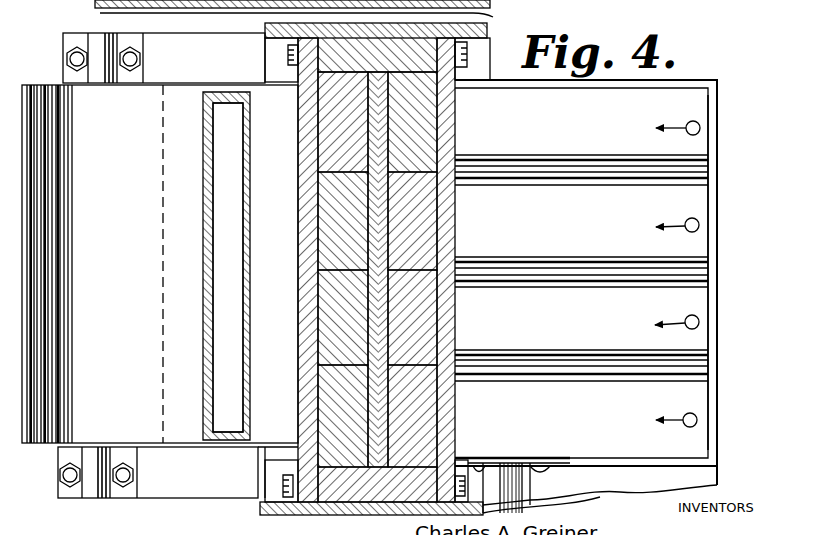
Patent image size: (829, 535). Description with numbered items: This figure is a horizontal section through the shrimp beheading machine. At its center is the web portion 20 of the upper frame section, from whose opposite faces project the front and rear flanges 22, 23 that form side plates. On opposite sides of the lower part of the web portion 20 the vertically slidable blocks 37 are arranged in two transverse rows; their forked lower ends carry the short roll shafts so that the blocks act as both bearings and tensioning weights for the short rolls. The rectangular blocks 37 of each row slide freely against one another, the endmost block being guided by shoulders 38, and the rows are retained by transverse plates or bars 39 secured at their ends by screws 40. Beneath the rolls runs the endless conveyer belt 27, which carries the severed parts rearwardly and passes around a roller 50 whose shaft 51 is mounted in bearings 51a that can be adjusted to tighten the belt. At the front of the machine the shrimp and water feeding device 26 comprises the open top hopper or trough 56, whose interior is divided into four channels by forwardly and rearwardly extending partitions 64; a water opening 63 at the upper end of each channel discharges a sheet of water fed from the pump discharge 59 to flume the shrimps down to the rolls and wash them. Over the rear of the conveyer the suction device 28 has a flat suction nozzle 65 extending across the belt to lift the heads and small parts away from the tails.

The web portion 20 is at (374, 225).
The front flange 22 is at (477, 25).
The rear flange 23 is at (266, 24).
The shrimp and water feeding device 26 is at (678, 80).
The endless conveyer belt 27 is at (152, 258).
The suction device 28 is at (202, 175).
The vertically slidable blocks 37 is at (331, 143).
The shoulders 38 is at (426, 67).
The transverse plates or bars 39 is at (305, 312).
The screws 40 is at (284, 60).
The roller 50 is at (156, 332).
The shaft 51 is at (97, 86).
The bearings 51a is at (99, 42).
The open top hopper or trough 56 is at (703, 104).
The pump discharge 59 is at (519, 492).
The water openings 63 is at (691, 121).
The partitions 64 is at (582, 172).
The suction nozzle 65 is at (221, 238).